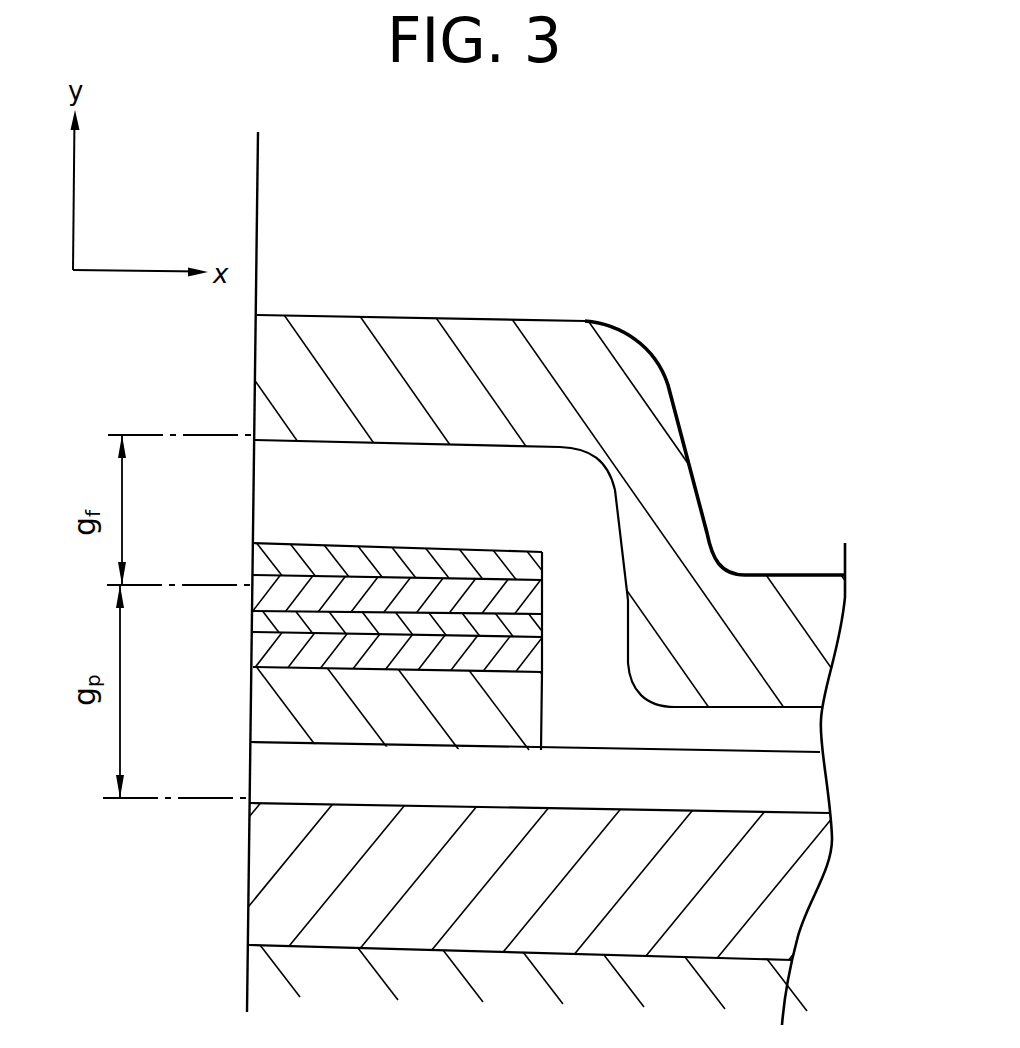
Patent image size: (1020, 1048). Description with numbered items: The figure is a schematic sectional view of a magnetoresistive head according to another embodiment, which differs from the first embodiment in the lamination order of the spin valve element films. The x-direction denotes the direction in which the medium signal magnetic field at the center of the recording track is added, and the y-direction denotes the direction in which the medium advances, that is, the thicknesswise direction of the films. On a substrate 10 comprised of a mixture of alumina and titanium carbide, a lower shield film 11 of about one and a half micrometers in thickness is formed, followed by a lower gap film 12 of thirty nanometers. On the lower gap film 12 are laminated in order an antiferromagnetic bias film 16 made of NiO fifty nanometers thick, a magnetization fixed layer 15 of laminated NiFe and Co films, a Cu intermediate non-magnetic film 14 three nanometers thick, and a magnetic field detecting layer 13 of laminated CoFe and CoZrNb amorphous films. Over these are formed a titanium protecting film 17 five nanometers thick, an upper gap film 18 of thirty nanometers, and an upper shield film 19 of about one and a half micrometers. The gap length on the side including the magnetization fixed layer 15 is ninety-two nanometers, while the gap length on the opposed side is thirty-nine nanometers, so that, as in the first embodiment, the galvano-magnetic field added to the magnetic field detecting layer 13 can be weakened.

The substrate 10 is at (268, 985).
The lower shield film 11 is at (268, 863).
The lower gap film 12 is at (277, 780).
The magnetic field detecting layer 13 is at (533, 597).
The intermediate non-magnetic film 14 is at (533, 628).
The magnetization fixed layer 15 is at (533, 658).
The antiferromagnetic bias film 16 is at (277, 705).
The protecting film 17 is at (533, 567).
The upper gap film 18 is at (287, 508).
The upper shield film 19 is at (287, 372).